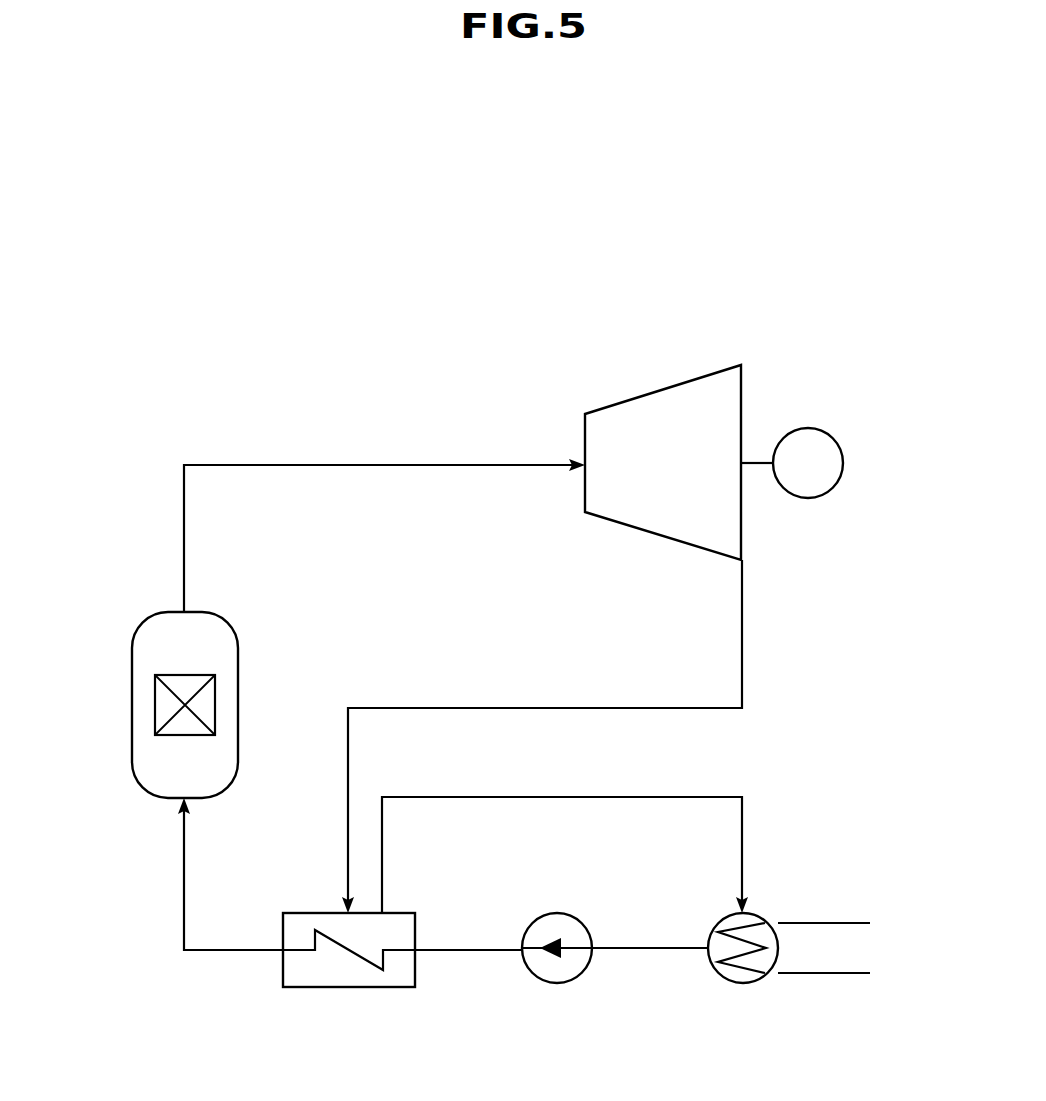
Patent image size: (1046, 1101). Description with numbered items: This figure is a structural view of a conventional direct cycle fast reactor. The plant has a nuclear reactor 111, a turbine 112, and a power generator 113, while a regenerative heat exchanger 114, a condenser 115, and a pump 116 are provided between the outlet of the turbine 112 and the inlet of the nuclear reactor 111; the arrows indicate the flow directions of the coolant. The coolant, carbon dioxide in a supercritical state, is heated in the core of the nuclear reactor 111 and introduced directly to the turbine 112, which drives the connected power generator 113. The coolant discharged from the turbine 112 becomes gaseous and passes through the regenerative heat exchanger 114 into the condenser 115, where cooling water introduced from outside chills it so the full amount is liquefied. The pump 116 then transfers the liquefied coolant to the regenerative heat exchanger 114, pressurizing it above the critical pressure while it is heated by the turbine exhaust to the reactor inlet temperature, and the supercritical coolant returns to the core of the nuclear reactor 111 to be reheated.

The nuclear reactor 111 is at (132, 684).
The turbine 112 is at (667, 388).
The power generator 113 is at (826, 430).
The regenerative heat exchanger 114 is at (358, 988).
The condenser 115 is at (758, 980).
The pump 116 is at (583, 975).